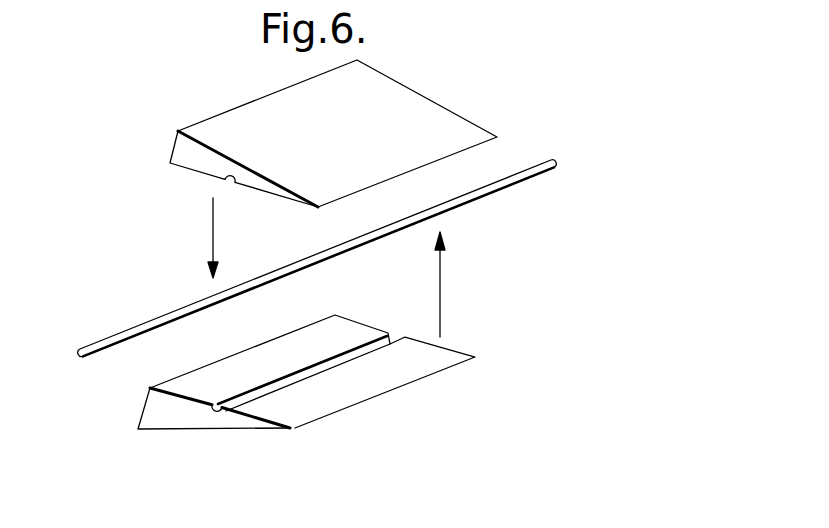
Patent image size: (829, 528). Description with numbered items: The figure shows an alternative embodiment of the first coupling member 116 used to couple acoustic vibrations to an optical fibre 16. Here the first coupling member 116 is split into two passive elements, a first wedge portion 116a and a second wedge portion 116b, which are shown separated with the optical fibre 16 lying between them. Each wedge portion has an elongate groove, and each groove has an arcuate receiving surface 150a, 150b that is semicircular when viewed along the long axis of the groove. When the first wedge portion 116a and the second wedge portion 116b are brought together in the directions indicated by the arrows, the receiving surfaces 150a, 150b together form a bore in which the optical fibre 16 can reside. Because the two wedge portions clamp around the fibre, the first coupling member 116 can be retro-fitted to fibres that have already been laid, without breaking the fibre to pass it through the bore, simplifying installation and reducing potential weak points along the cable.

The first coupling member 116 is at (285, 278).
The first wedge portion 116a is at (347, 151).
The second wedge portion 116b is at (306, 406).
The arcuate receiving surface 150a is at (225, 183).
The arcuate receiving surface 150b is at (208, 416).
The optical fibre 16 is at (503, 189).